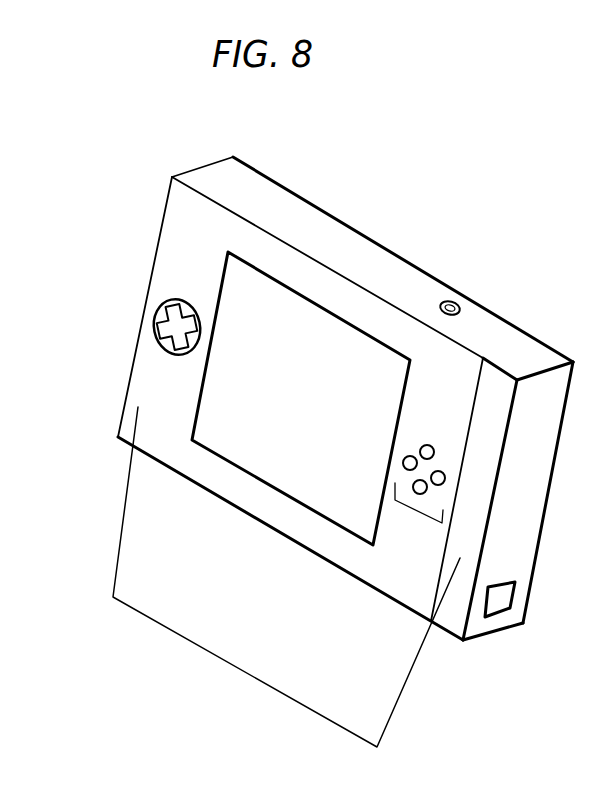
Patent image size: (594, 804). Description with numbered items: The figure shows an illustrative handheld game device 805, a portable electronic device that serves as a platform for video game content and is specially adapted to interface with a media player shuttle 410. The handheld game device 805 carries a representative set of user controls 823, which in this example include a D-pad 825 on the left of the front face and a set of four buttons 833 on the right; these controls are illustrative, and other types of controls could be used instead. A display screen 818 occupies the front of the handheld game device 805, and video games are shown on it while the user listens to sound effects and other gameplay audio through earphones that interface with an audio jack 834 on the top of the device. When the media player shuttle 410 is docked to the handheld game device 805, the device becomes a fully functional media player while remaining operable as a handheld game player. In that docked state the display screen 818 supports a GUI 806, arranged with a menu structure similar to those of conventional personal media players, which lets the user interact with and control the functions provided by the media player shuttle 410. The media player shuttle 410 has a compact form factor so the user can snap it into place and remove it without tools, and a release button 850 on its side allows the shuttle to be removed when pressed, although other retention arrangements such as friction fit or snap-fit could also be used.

The handheld game device 805 is at (273, 182).
The media player shuttle 410 is at (561, 350).
The display screen 818 is at (323, 500).
The GUI 806 is at (347, 373).
The user controls 823 is at (233, 666).
The D-pad 825 is at (170, 323).
The set of four buttons 833 is at (418, 512).
The audio jack 834 is at (452, 303).
The release button 850 is at (500, 600).